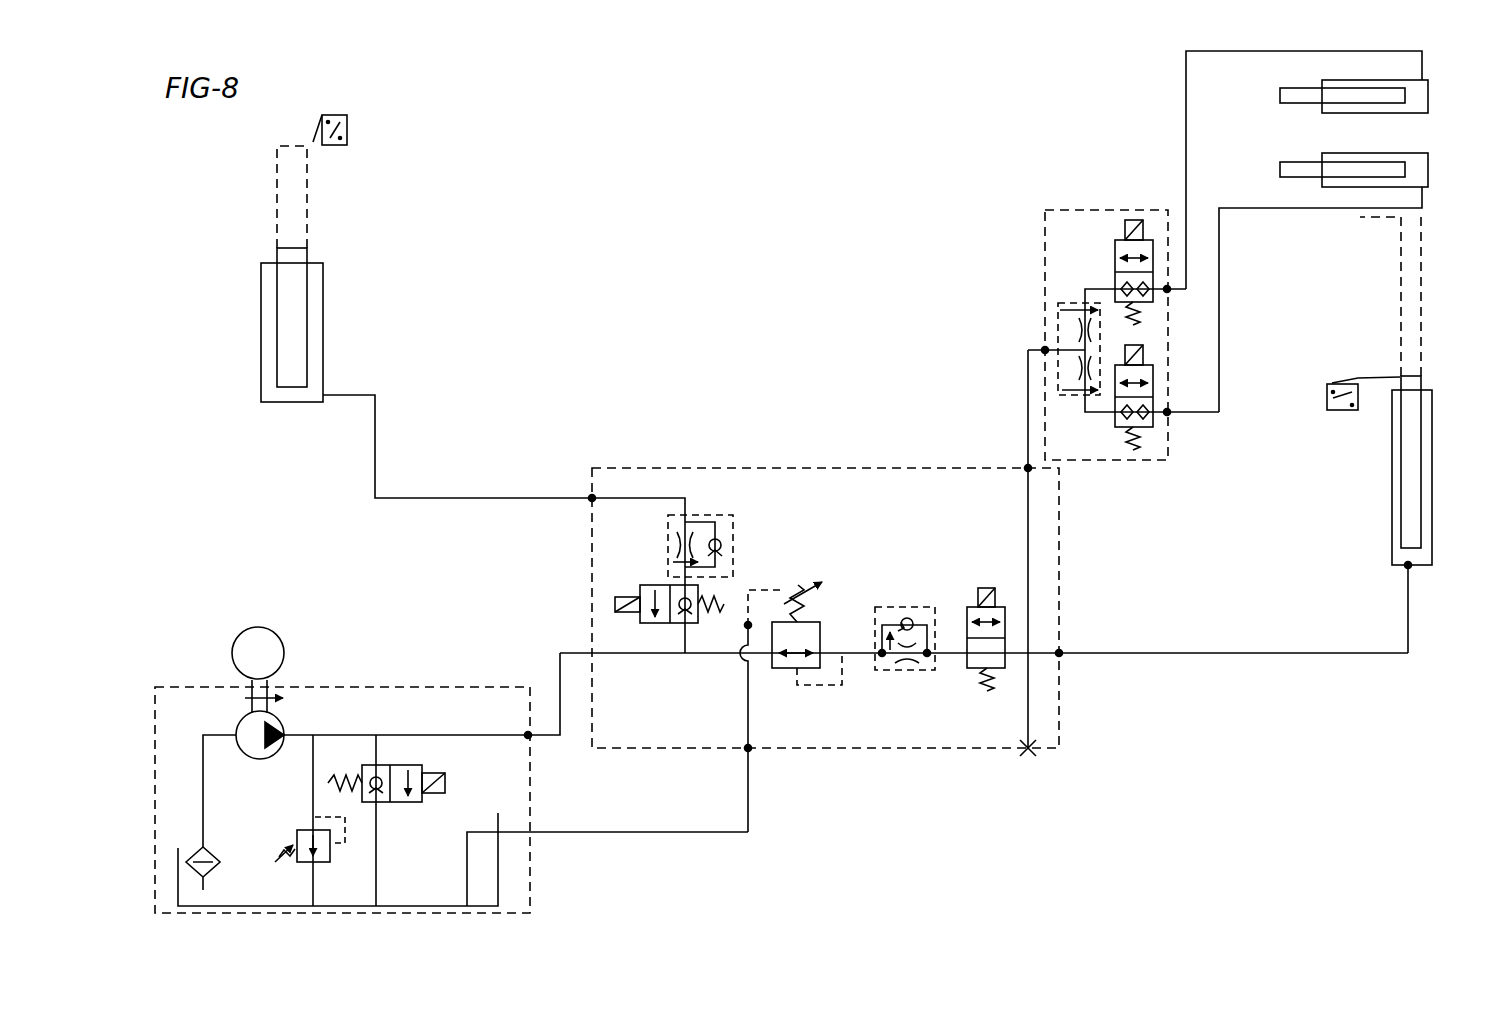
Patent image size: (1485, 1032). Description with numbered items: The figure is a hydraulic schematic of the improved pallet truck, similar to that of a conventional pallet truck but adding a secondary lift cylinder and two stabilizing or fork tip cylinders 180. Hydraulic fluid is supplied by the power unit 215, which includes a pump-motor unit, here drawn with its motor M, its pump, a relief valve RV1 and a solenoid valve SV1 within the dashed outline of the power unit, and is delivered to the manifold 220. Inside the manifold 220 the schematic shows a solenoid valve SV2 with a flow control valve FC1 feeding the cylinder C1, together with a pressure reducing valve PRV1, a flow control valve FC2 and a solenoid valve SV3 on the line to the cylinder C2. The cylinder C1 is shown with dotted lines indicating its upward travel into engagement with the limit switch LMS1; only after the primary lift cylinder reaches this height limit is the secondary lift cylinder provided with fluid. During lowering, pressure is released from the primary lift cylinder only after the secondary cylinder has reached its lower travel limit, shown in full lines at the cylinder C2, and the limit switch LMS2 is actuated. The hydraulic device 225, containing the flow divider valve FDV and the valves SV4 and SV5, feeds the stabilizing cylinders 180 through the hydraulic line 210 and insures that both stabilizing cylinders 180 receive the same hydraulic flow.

The hydraulic line 210 is at (1186, 110).
The stabilizing cylinders 180 is at (1428, 95).
The hydraulic device 225 is at (1043, 236).
The manifold 220 is at (637, 465).
The power unit 215 is at (377, 687).
The cylinder C1 is at (428, 324).
The cylinder C2 is at (1383, 435).
The limit switch LMS1 is at (366, 131).
The limit switch LMS2 is at (1357, 410).
The flow control valve 1 FC1 is at (674, 546).
The flow control valve 2 FC2 is at (902, 621).
The solenoid valve 1 SV1 is at (400, 820).
The solenoid valve 2 SV2 is at (663, 617).
The solenoid valve 3 SV3 is at (986, 624).
The valve SV4 is at (1144, 254).
The valve SV5 is at (1164, 418).
The flow divider valve FDV is at (1040, 349).
The pressure reducing valve 1 PRV1 is at (798, 649).
The relief valve 1 RV1 is at (297, 820).
The electric motor M is at (258, 670).